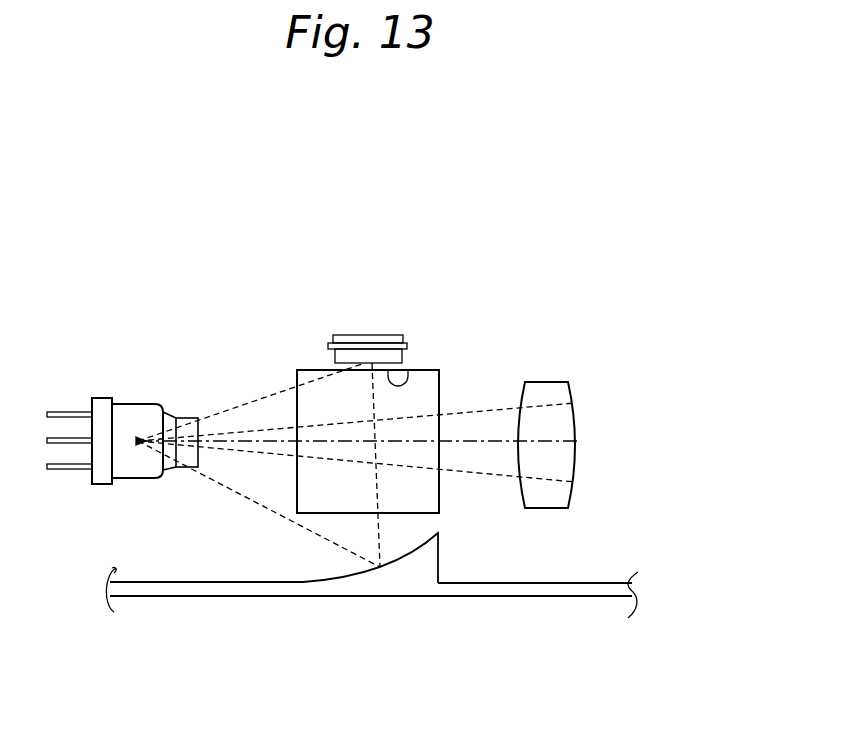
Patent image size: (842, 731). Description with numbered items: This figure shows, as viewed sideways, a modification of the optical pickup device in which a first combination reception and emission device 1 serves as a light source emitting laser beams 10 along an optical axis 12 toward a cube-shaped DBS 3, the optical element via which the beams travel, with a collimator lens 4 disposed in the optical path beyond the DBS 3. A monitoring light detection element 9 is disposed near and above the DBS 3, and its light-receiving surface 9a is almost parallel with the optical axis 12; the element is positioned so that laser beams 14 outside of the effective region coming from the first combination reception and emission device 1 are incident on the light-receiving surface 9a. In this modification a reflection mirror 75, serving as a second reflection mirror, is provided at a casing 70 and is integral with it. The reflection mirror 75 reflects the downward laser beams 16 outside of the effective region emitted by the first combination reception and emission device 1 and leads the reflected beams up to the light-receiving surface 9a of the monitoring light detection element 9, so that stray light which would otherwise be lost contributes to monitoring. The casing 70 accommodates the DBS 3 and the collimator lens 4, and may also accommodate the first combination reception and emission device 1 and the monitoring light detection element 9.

The first combination reception and emission device 1 is at (137, 480).
The DBS 3 is at (315, 371).
The collimator lens 4 is at (545, 380).
The monitoring light detection element 9 is at (372, 334).
The light-receiving surface 9a is at (405, 371).
The laser beams 10 is at (250, 453).
The optical axis 12 is at (222, 435).
The laser beams outside of the effective region 14 is at (265, 395).
The downward laser beams outside of the effective region 16 is at (207, 477).
The casing 70 is at (308, 597).
The reflection mirror 75 is at (418, 565).